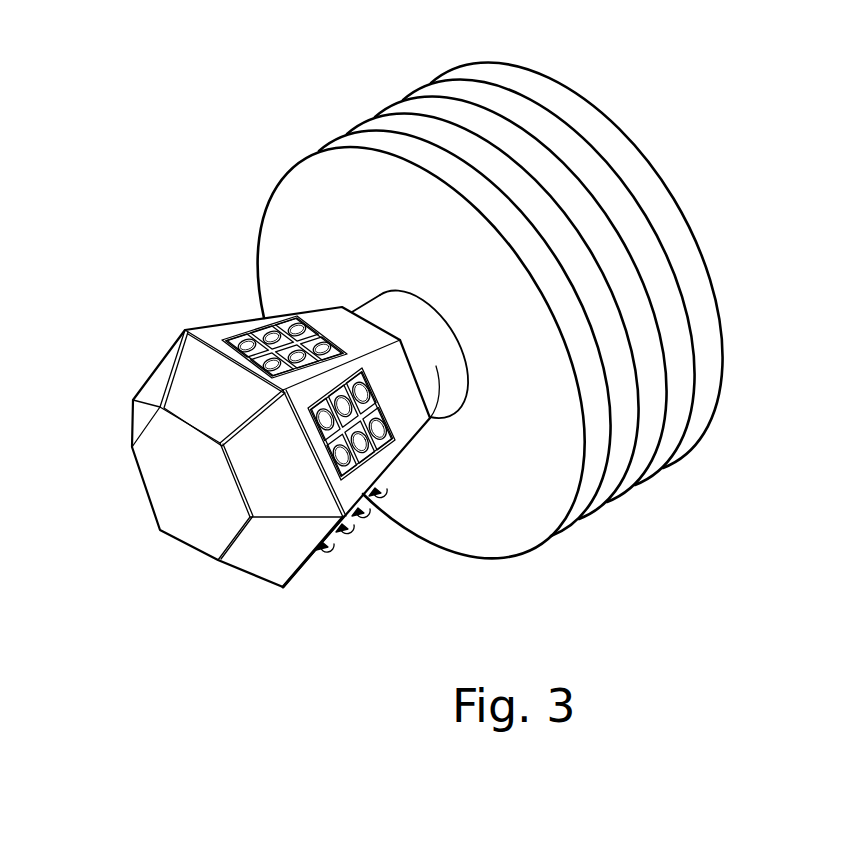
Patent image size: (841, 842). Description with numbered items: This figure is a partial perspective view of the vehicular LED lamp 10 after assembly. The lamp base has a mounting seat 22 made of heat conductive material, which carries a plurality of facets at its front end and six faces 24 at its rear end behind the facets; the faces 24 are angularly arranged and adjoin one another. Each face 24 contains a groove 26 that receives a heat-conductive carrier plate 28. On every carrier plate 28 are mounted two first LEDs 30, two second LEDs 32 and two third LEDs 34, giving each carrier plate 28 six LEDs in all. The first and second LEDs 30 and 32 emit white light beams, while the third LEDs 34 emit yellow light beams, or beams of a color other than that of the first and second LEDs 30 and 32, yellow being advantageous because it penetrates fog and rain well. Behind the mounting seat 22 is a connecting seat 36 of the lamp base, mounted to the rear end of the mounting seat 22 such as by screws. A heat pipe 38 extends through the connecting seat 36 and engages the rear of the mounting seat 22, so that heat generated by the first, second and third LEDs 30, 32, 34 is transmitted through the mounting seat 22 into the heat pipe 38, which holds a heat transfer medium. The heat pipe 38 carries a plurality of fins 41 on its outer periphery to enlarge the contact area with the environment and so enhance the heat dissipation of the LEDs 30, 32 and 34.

The vehicular LED lamp 10 is at (240, 182).
The mounting seat 22 is at (147, 497).
The faces 24 is at (340, 497).
The groove 26 is at (310, 406).
The carrier plate 28 is at (377, 432).
The first LEDs 30 is at (248, 338).
The second LEDs 32 is at (272, 333).
The third LEDs 34 is at (295, 324).
The connecting seat 36 is at (378, 335).
The heat pipe 38 is at (452, 365).
The fins 41 is at (712, 349).